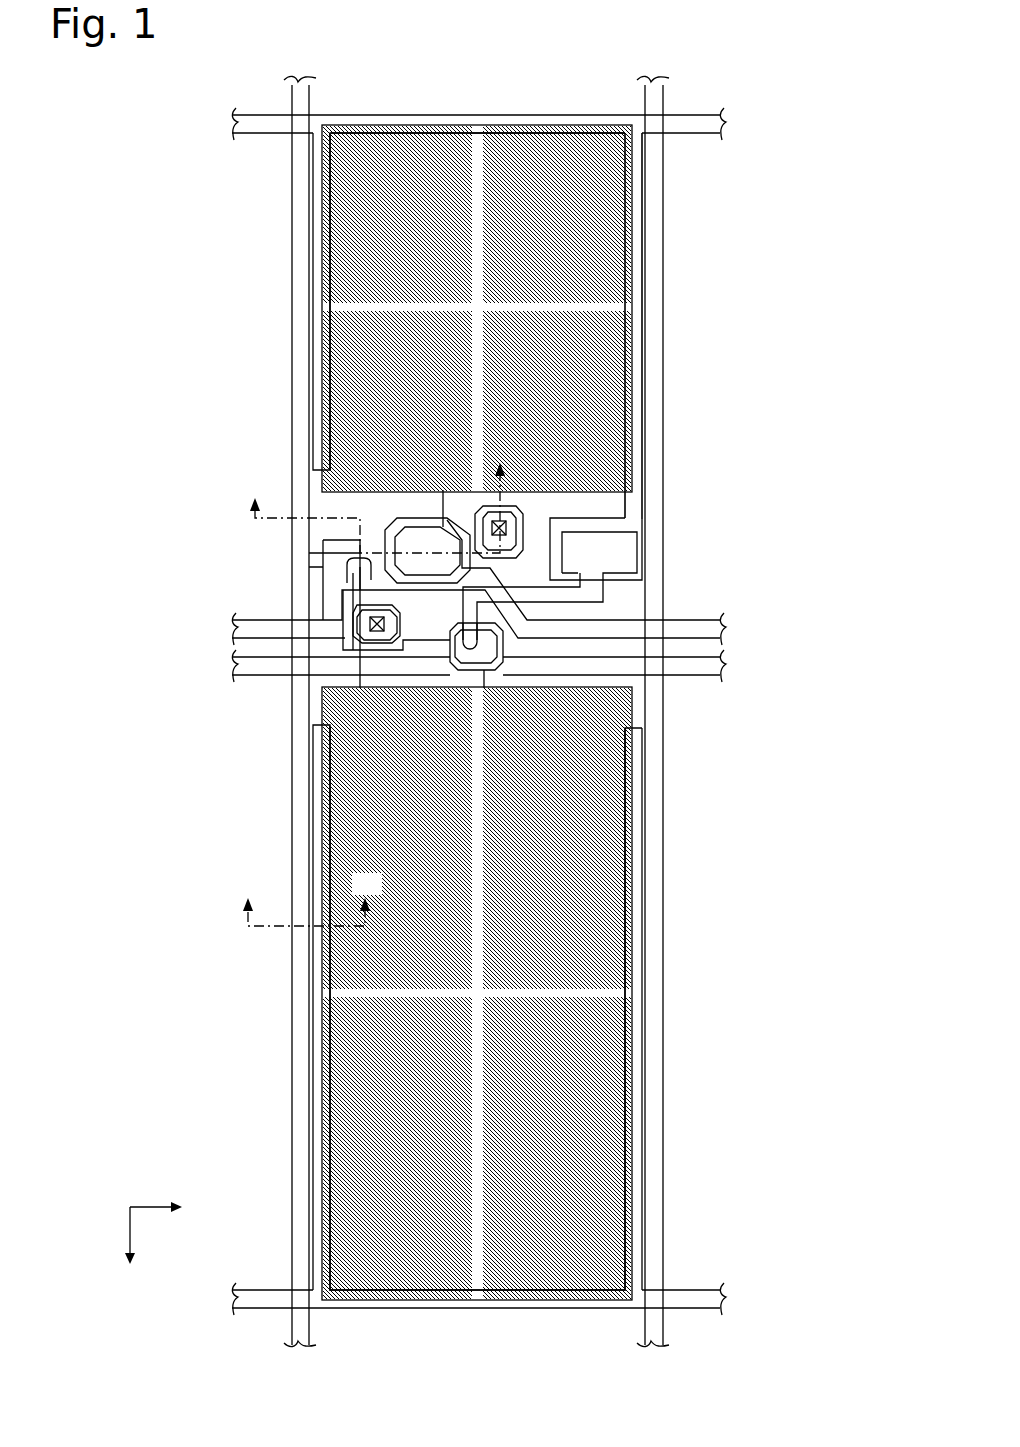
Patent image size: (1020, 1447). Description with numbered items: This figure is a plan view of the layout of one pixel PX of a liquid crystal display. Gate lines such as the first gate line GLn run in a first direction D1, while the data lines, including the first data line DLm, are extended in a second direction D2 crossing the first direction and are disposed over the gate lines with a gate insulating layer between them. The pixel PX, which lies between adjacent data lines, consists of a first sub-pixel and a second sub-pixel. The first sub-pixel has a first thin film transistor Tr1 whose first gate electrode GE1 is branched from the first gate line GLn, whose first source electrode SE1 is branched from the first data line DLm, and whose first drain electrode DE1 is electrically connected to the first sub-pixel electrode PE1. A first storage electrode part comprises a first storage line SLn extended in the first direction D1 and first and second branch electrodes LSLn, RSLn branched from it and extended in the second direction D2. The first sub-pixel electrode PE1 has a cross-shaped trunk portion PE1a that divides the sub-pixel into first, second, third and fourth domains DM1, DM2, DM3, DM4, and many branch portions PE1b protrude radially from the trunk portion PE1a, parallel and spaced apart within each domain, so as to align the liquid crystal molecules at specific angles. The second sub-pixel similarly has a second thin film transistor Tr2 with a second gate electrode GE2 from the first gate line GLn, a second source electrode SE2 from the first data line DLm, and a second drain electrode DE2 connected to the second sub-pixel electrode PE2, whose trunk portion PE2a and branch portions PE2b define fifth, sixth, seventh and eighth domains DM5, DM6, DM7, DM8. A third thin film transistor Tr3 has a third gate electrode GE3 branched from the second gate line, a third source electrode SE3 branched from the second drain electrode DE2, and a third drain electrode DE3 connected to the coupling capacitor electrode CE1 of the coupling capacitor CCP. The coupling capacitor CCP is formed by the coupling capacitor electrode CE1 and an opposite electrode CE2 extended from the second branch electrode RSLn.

The pixel PX is at (488, 105).
The m-th data line DLm is at (300, 80).
The first storage line SLn is at (722, 125).
The first branch electrode LSLn is at (313, 257).
The second branch electrode RSLn is at (642, 257).
The n-th gate line GLn is at (232, 630).
The first sub-pixel electrode PE1 is at (520, 308).
The trunk portion PE1a is at (489, 308).
The branch portions PE1b is at (585, 386).
The second sub-pixel electrode PE2 is at (513, 993).
The trunk portion PE2a is at (481, 993).
The branch portions PE2b is at (540, 1092).
The first domain DM1 is at (390, 345).
The second domain DM2 is at (390, 195).
The third domain DM3 is at (570, 190).
The fourth domain DM4 is at (574, 430).
The fifth domain DM5 is at (368, 800).
The sixth domain DM6 is at (574, 780).
The seventh domain DM7 is at (574, 1225).
The eighth domain DM8 is at (390, 1078).
The first thin film transistor Tr1 is at (336, 483).
The second thin film transistor Tr2 is at (299, 608).
The third thin film transistor Tr3 is at (326, 717).
The first gate electrode GE1 is at (408, 520).
The first source electrode SE1 is at (427, 527).
The first drain electrode DE1 is at (443, 527).
The second gate electrode GE2 is at (335, 538).
The second source electrode SE2 is at (322, 565).
The second drain electrode DE2 is at (355, 585).
The third gate electrode GE3 is at (458, 648).
The third source electrode SE3 is at (484, 668).
The third drain electrode DE3 is at (470, 638).
The coupling capacitor CCP is at (630, 574).
The coupling capacitor electrode CE1 is at (640, 555).
The opposite electrode CE2 is at (642, 519).
The first direction D1 is at (171, 1208).
The second direction D2 is at (126, 1250).